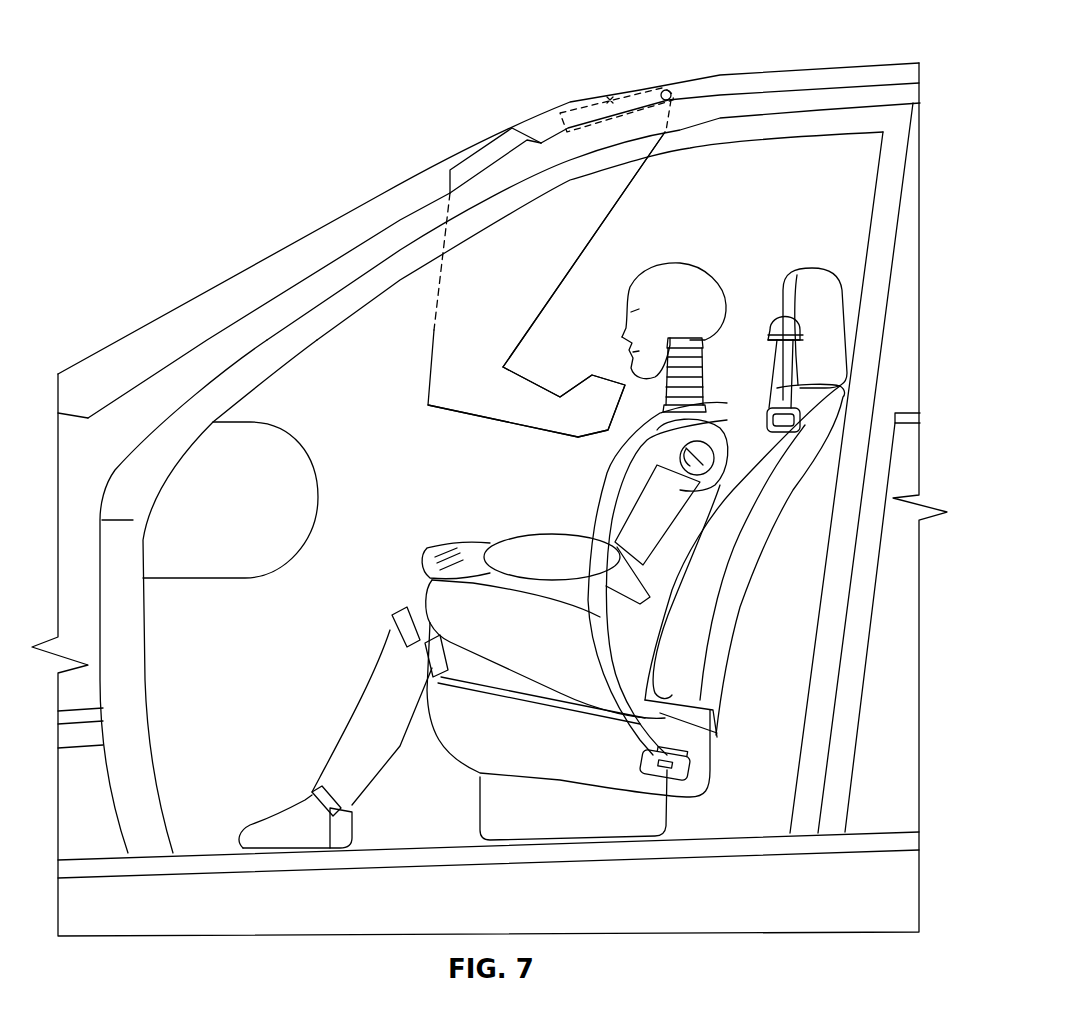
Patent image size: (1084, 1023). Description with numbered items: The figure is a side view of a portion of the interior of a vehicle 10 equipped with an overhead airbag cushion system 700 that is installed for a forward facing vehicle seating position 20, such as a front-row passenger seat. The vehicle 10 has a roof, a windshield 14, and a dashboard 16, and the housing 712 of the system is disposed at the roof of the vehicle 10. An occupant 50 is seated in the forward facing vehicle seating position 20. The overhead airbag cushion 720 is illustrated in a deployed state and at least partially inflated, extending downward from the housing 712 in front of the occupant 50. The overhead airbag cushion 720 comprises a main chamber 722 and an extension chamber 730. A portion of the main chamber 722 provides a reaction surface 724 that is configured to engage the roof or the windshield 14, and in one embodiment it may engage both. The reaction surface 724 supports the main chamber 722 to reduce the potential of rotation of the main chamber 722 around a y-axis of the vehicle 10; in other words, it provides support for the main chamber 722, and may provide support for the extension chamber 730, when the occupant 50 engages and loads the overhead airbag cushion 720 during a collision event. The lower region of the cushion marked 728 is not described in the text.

The vehicle 10 is at (329, 82).
The windshield 14 is at (262, 290).
The dashboard 16 is at (246, 515).
The forward facing vehicle seating position 20 is at (817, 287).
The occupant 50 is at (688, 262).
The overhead airbag cushion system 700 is at (564, 94).
The housing 712 is at (607, 93).
The overhead airbag cushion 720 is at (494, 343).
The main chamber 722 is at (552, 258).
The reaction surface 724 is at (483, 147).
The lower edge 728 is at (448, 412).
The extension chamber 730 is at (545, 417).